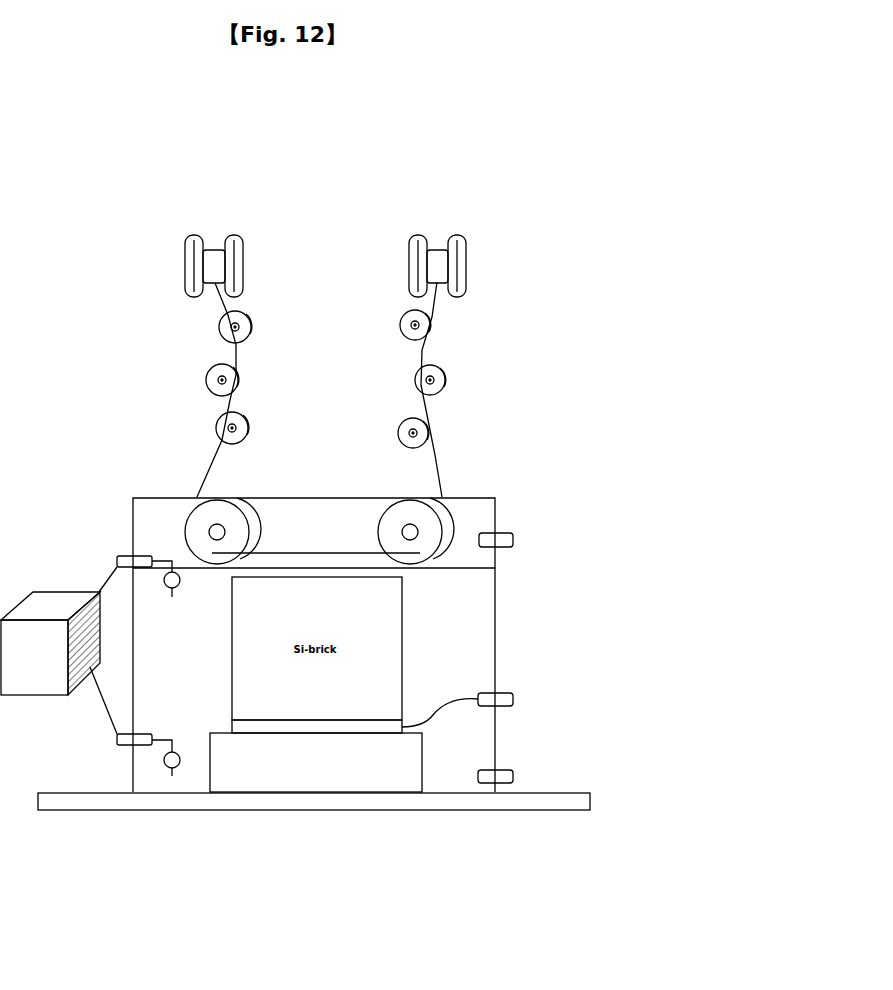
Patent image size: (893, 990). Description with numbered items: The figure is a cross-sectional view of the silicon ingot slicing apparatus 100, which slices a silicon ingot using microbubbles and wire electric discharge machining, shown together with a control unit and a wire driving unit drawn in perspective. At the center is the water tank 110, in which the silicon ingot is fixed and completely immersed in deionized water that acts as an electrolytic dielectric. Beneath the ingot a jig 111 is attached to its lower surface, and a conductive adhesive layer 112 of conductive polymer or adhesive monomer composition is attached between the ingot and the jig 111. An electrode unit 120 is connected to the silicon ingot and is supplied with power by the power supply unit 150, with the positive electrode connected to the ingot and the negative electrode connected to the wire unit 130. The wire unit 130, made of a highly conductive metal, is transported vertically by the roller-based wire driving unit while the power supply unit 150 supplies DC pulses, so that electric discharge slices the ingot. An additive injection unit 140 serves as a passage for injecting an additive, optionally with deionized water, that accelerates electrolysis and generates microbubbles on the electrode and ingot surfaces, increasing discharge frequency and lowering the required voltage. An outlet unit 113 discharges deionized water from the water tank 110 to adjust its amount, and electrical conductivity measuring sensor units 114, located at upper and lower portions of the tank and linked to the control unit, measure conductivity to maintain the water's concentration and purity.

The silicon ingot slicing apparatus 100 is at (490, 240).
The water tank 110 is at (443, 776).
The jig 111 is at (321, 780).
The conductive adhesive layer 112 is at (257, 726).
The outlet unit 113 is at (513, 540).
The electrical conductivity measuring sensor unit 114 is at (116, 560).
The electrode unit 120 is at (415, 379).
The wire unit 130 is at (440, 490).
The additive injection unit 140 is at (513, 776).
The power supply unit 150 is at (513, 699).